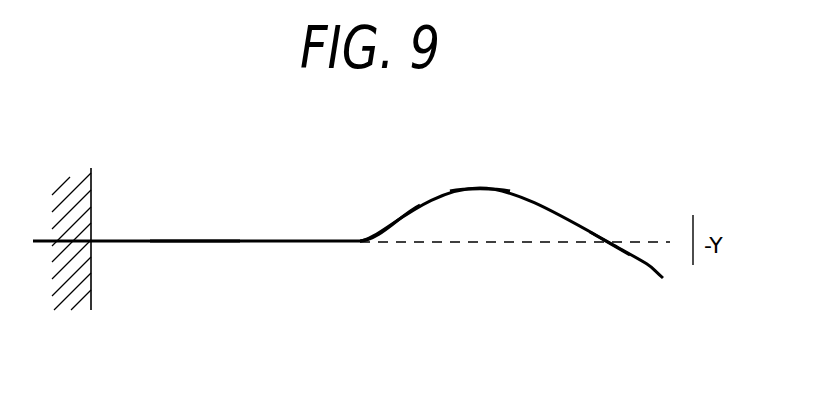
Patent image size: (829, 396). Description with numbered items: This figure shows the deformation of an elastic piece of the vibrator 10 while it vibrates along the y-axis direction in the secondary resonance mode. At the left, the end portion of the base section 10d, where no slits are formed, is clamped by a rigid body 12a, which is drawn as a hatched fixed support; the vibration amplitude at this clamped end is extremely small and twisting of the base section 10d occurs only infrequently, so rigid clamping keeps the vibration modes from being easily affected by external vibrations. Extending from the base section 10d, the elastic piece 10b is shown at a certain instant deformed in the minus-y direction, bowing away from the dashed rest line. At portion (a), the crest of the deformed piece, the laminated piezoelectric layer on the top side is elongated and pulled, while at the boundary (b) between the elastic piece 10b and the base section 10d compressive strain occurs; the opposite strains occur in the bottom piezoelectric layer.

The rigid body 12a is at (92, 180).
The vibrator 10 is at (250, 233).
The base section 10d is at (193, 245).
The side elastic piece 10b is at (612, 252).
The elongated and pulled portion a is at (505, 184).
The boundary between elastic piece and base section b is at (378, 223).